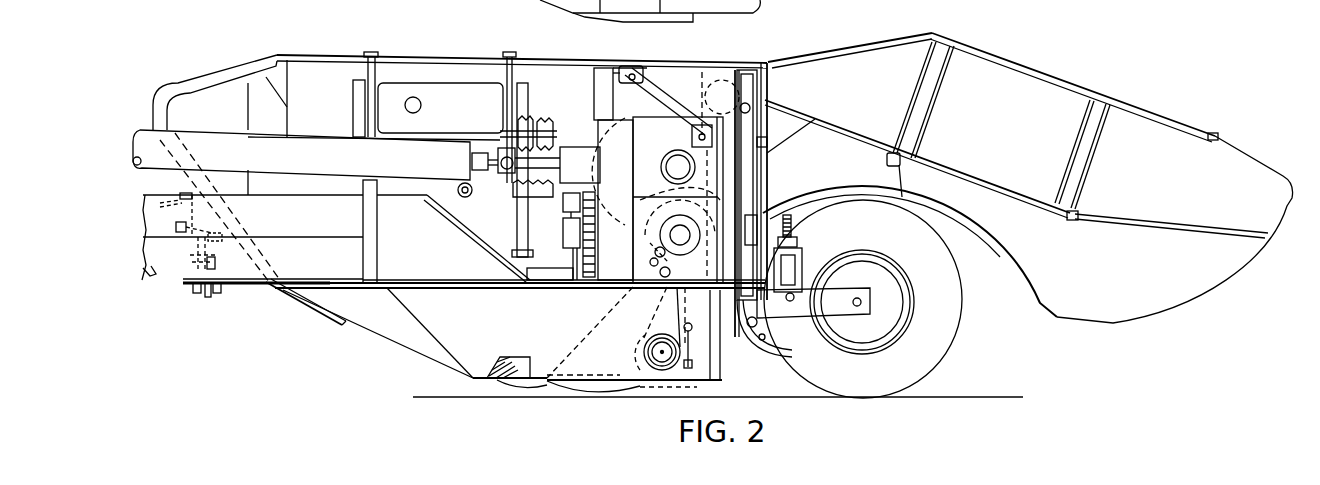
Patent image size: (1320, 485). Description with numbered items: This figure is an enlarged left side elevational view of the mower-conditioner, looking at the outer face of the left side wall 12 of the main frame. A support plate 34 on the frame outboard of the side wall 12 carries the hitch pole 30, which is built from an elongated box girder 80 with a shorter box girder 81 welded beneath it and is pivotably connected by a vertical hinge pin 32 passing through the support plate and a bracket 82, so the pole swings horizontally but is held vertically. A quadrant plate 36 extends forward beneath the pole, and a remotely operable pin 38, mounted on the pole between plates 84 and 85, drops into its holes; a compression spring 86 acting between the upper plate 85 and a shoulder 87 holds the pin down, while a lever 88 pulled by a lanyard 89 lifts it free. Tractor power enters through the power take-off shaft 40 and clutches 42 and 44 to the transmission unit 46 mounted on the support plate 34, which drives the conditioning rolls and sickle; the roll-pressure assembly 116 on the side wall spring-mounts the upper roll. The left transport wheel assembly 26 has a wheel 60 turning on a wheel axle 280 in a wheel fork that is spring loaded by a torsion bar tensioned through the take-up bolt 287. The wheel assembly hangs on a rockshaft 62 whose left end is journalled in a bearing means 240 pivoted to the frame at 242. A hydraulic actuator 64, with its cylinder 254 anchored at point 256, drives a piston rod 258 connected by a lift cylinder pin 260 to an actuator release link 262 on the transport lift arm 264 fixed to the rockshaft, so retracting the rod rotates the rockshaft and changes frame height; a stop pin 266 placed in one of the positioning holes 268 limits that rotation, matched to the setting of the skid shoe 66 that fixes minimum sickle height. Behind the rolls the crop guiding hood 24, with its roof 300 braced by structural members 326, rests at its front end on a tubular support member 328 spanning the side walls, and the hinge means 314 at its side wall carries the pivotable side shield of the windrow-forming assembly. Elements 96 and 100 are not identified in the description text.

The side wall 12 is at (330, 110).
The crop guiding hood 24 is at (837, 46).
The left transport wheel assembly 26 is at (955, 368).
The hitch pole 30 is at (143, 283).
The vertical hinge pin 32 is at (367, 216).
The support plate 34 is at (450, 288).
The quadrant plate 36 is at (262, 290).
The remotely operable pin 38 is at (210, 295).
The power take-off shaft 40 is at (224, 137).
The clutch 42 is at (540, 128).
The clutch 44 is at (557, 150).
The transmission unit 46 is at (622, 214).
The wheel 60 is at (955, 328).
The rockshaft 62 is at (648, 384).
The hydraulic actuator 64 is at (765, 144).
The skid shoe 66 is at (547, 386).
The elongated box girder 80 is at (297, 223).
The shorter box girder 81 is at (313, 263).
The bracket 82 is at (343, 186).
The plate 84 is at (152, 277).
The upper plate 85 is at (196, 254).
The compression spring 86 is at (216, 266).
The shoulder 87 is at (221, 288).
The lever 88 is at (178, 224).
The lanyard 89 is at (165, 199).
The gear box 96 is at (563, 165).
The mounting plate 100 is at (630, 119).
The roll-pressure assembly 116 is at (674, 78).
The bearing means 240 is at (686, 387).
The pivot connection 242 is at (662, 380).
The cylinder 254 is at (757, 137).
The anchor point 256 is at (767, 101).
The piston rod 258 is at (757, 324).
The lift cylinder pin 260 is at (778, 362).
The actuator release link 262 is at (743, 343).
The transport lift arm 264 is at (765, 338).
The stop pin 266 is at (650, 260).
The positioning holes 268 is at (655, 248).
The wheel axle 280 is at (857, 306).
The torsion spring take-up bolt 287 is at (793, 222).
The roof 300 is at (1032, 70).
The hinge means 314 is at (921, 80).
The structural members 326 is at (1080, 125).
The tubular support member 328 is at (727, 78).